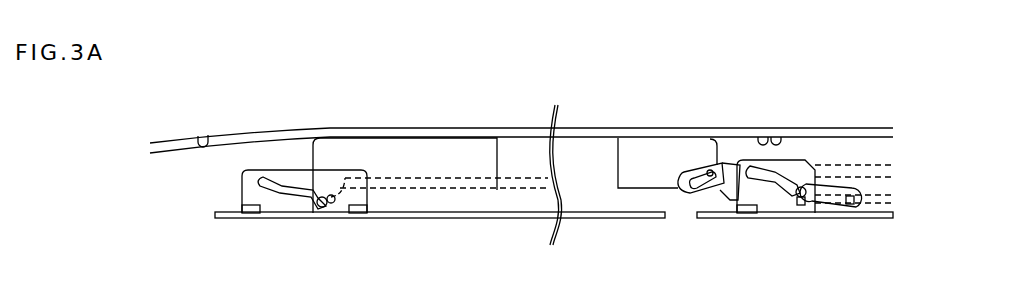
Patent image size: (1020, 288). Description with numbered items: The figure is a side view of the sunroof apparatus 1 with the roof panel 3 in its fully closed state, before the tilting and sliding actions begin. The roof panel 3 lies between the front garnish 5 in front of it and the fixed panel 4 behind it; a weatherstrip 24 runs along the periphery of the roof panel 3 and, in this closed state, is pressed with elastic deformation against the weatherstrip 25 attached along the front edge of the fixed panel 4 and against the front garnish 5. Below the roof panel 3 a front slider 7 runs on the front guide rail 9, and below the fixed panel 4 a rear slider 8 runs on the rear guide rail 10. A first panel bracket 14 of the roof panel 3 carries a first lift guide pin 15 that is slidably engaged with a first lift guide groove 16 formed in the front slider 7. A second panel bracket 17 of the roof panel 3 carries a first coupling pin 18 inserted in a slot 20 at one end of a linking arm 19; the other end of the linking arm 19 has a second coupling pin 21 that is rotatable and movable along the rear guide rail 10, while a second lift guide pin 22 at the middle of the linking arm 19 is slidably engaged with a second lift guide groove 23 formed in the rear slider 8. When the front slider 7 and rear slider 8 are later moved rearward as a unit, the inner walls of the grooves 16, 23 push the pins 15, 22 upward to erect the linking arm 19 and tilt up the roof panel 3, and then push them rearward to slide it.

The sunroof apparatus 1 is at (305, 79).
The roof panel 3 is at (505, 137).
The fixed panel 4 is at (855, 128).
The front garnish 5 is at (176, 143).
The front slider 7 is at (286, 178).
The rear slider 8 is at (752, 160).
The front guide rail 9 is at (493, 218).
The rear guide rail 10 is at (883, 218).
The first panel bracket 14 is at (437, 165).
The first lift guide pin 15 is at (320, 207).
The first lift guide groove 16 is at (283, 196).
The second panel bracket 17 is at (632, 160).
The first coupling pin 18 is at (709, 170).
The linking arm 19 is at (725, 182).
The slot 20 is at (690, 168).
The second coupling pin 21 is at (847, 206).
The second lift guide pin 22 is at (800, 206).
The second lift guide groove 23 is at (778, 198).
The weatherstrip 24 is at (763, 136).
The weatherstrip 25 is at (778, 136).